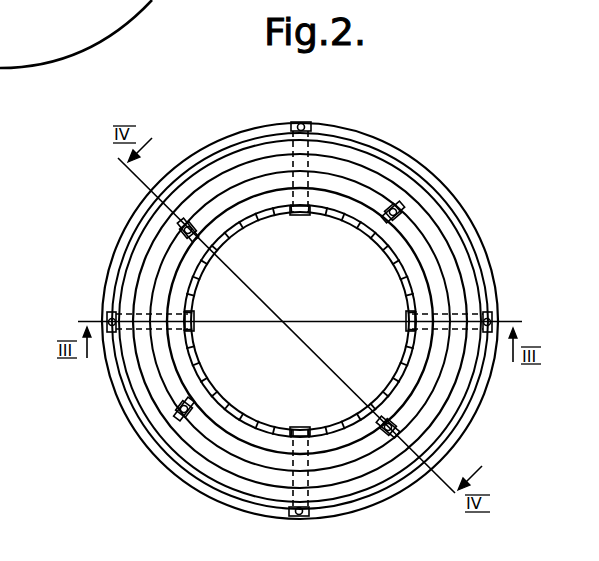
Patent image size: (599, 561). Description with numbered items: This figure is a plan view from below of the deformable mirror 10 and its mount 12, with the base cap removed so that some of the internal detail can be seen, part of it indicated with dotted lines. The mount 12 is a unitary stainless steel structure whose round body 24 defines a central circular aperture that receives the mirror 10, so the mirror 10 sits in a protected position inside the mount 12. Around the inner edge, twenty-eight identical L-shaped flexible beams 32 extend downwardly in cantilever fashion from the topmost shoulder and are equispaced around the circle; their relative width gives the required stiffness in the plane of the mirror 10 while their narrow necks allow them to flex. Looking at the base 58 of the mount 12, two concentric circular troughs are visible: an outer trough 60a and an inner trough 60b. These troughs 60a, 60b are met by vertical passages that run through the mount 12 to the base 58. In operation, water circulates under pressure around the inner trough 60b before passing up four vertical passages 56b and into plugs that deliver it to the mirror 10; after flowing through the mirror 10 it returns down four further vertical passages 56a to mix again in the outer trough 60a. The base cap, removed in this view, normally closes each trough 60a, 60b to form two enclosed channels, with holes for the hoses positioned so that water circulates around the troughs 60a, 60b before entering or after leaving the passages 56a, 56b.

The deformable mirror 10 is at (328, 305).
The mount 12 is at (398, 133).
The round body 24 is at (473, 230).
The flexible beams 32 is at (300, 215).
The vertical passages 56a is at (310, 121).
The vertical passages 56b is at (398, 209).
The base 58 is at (128, 395).
The outer trough 60a is at (150, 455).
The inner trough 60b is at (245, 167).